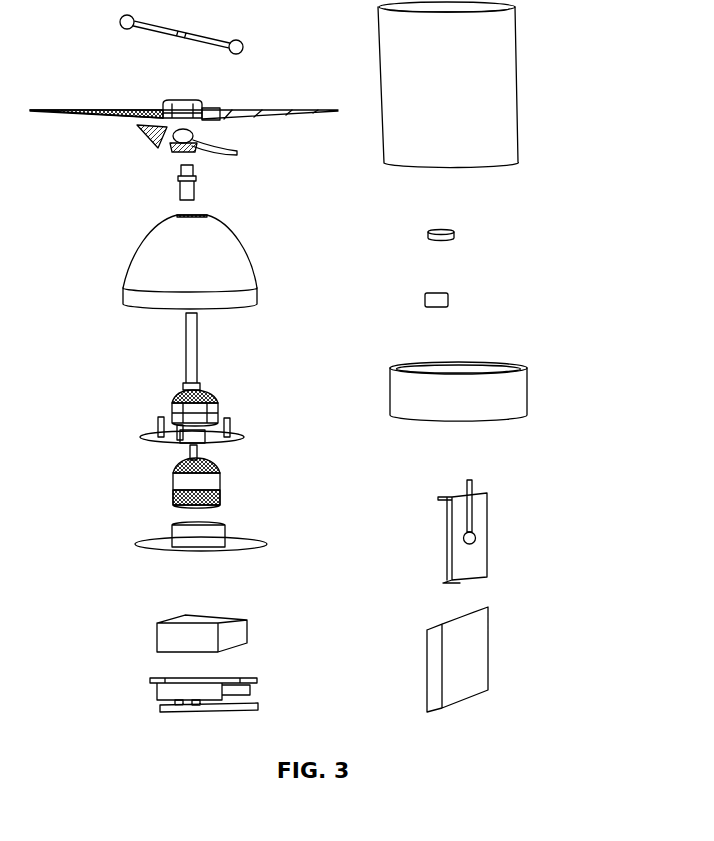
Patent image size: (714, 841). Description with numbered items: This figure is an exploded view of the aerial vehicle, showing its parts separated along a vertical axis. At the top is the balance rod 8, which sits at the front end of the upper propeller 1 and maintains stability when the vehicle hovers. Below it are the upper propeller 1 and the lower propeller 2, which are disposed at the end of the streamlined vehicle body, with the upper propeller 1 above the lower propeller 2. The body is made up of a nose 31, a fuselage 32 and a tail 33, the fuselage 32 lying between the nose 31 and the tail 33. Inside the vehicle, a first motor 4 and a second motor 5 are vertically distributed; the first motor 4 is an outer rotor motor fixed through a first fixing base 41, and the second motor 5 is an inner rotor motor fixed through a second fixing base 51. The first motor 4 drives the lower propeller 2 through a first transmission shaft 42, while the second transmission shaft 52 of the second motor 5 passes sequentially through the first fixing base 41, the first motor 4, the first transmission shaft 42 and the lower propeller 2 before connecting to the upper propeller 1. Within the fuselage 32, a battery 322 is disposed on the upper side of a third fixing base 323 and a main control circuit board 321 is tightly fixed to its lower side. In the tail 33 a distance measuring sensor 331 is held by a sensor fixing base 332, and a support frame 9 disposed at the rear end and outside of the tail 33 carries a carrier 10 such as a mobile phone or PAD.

The upper propeller 1 is at (283, 108).
The lower propeller 2 is at (238, 152).
The first motor 4 is at (223, 397).
The second motor 5 is at (226, 480).
The balance rod 8 is at (250, 43).
The support frame 9 is at (486, 545).
The carrier 10 is at (488, 662).
The nose 31 is at (238, 253).
The fuselage 32 is at (518, 80).
The tail 33 is at (529, 385).
The first fixing base 41 is at (144, 437).
The first transmission shaft 42 is at (173, 183).
The second fixing base 51 is at (136, 547).
The second transmission shaft 52 is at (185, 357).
The main control circuit board 321 is at (258, 706).
The battery 322 is at (246, 618).
The third fixing base 323 is at (153, 688).
The distance measuring sensor 331 is at (451, 298).
The sensor fixing base 332 is at (458, 237).